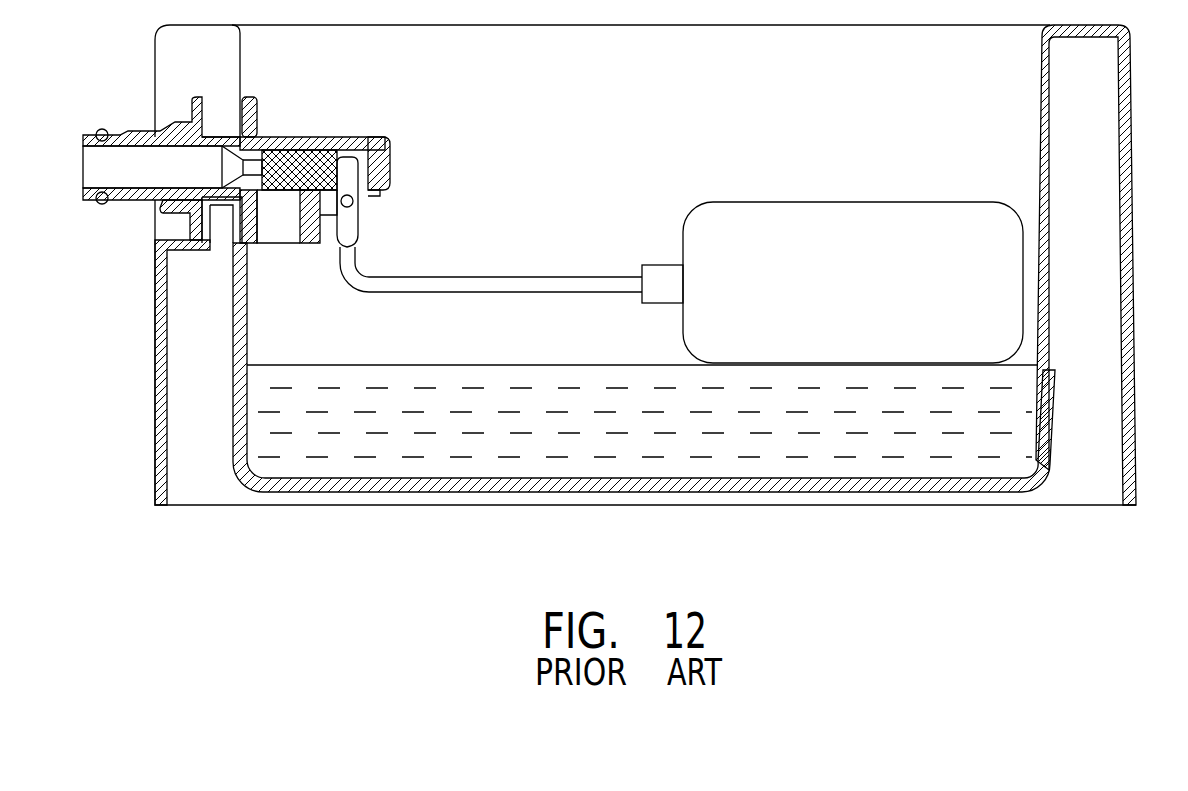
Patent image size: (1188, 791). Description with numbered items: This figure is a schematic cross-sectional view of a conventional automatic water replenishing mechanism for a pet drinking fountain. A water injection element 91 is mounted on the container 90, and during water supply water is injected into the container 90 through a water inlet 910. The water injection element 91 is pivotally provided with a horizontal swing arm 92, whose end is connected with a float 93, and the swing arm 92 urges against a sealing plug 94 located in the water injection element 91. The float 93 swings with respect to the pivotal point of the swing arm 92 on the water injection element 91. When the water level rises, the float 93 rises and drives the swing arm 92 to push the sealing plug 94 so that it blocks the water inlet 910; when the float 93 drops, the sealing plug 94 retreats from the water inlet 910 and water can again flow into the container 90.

The container 90 is at (1134, 109).
The water inlet 910 is at (215, 160).
The water injection element 91 is at (236, 170).
The horizontal swing arm 92 is at (543, 280).
The float 93 is at (840, 212).
The sealing plug 94 is at (313, 140).